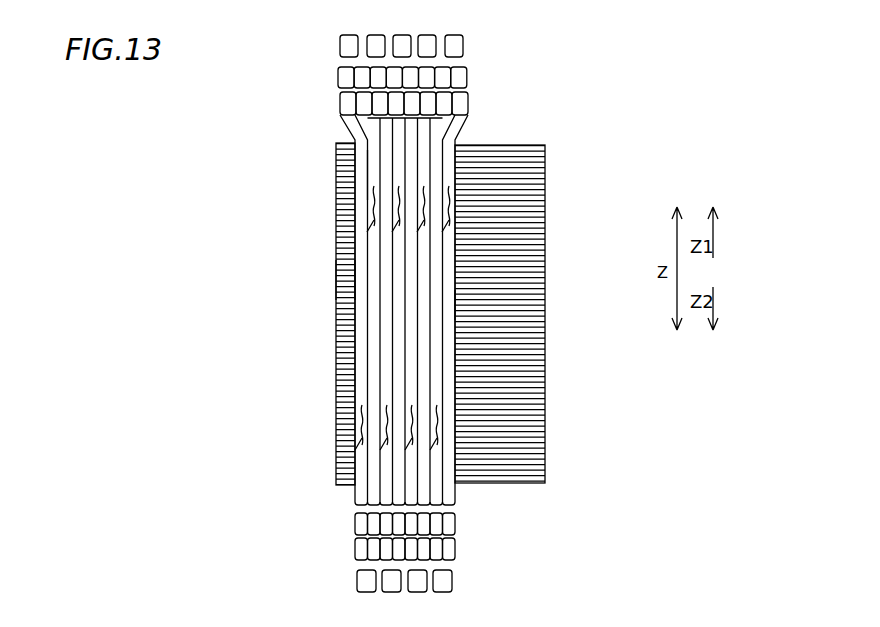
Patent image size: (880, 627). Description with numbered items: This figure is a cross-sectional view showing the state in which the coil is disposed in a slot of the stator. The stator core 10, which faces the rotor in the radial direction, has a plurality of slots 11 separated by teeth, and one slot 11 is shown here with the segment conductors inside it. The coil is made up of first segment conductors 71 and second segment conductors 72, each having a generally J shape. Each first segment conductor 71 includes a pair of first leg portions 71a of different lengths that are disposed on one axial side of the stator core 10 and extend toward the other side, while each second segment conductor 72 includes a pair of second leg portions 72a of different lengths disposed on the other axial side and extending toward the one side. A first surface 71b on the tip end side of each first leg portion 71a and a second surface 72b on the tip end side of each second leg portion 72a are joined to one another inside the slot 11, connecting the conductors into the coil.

The stator core 10 is at (518, 145).
The slot 11 is at (452, 316).
The first segment conductor 71 is at (372, 147).
The first leg portion 71a is at (368, 165).
The first surface 71b is at (367, 226).
The second segment conductor 72 is at (372, 350).
The second leg portion 72a is at (366, 277).
The second surface 72b is at (345, 188).